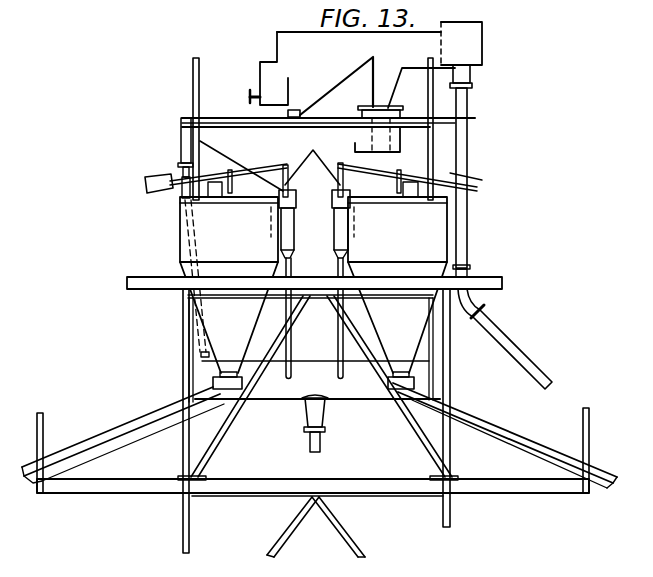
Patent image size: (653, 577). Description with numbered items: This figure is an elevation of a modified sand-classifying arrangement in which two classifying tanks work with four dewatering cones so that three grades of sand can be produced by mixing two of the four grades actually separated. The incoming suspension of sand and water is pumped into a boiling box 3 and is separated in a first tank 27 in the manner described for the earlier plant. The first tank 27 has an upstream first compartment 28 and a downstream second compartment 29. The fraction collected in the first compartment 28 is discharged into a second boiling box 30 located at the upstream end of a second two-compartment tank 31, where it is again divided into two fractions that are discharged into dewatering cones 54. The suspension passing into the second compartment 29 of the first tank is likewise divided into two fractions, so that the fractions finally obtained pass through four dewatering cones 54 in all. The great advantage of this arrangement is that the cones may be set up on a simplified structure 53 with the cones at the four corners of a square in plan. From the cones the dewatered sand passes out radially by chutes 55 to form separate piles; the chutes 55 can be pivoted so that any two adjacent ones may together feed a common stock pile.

The boiling box 3 is at (472, 38).
The first tank 27 is at (407, 42).
The first compartment 28 is at (390, 104).
The second compartment 29 is at (305, 87).
The second boiling box 30 is at (400, 139).
The second two-compartment tank 31 is at (245, 137).
The simplified structure 53 is at (470, 487).
The dewatering cones 54 is at (241, 252).
The chutes 55 is at (125, 425).